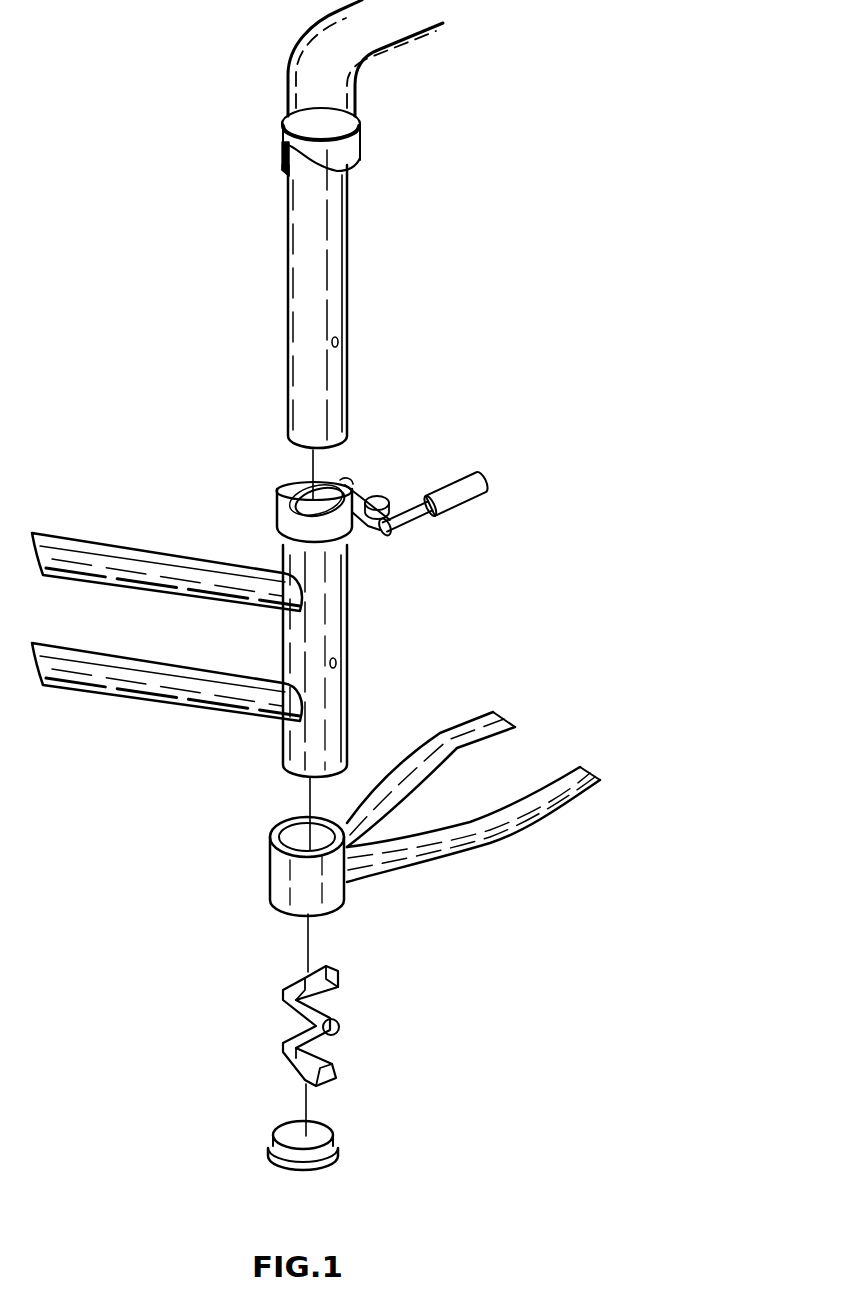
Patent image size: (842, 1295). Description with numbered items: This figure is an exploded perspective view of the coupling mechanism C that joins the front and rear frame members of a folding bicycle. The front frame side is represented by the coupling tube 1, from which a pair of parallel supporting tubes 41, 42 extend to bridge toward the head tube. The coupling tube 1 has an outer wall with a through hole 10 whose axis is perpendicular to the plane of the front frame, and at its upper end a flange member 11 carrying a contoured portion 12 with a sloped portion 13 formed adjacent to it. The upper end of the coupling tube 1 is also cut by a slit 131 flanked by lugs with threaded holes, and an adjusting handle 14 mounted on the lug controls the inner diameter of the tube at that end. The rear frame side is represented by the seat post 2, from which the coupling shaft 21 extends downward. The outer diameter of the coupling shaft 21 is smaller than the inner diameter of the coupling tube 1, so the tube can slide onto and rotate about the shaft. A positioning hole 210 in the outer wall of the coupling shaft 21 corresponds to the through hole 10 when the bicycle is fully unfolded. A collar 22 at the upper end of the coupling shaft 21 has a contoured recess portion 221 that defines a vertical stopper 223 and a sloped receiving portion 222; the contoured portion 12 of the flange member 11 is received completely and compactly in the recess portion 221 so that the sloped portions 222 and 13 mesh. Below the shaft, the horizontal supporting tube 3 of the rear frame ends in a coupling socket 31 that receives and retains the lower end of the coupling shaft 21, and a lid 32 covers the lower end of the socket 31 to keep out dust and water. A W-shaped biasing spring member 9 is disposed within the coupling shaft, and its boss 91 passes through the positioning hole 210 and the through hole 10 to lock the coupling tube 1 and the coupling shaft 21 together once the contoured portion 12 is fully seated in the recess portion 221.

The coupling tube 1 is at (347, 613).
The through hole 10 is at (340, 661).
The flange member 11 is at (290, 528).
The contoured portion 12 is at (282, 496).
The sloped portion 13 is at (337, 481).
The slit 131 is at (363, 548).
The adjusting handle 14 is at (467, 487).
The seat post 2 is at (388, 62).
The coupling shaft 21 is at (338, 270).
The positioning hole 210 is at (342, 342).
The collar 22 is at (352, 150).
The contoured recess portion 221 is at (282, 152).
The sloped receiving portion 222 is at (330, 175).
The vertical stopper 223 is at (280, 170).
The horizontal supporting tube 3 is at (440, 840).
The coupling socket 31 is at (268, 882).
The lid 32 is at (268, 1140).
The supporting tube 41 is at (112, 556).
The supporting tube 42 is at (162, 690).
The biasing spring member 9 is at (285, 1019).
The boss 91 is at (340, 1030).
The coupling mechanism C is at (502, 527).